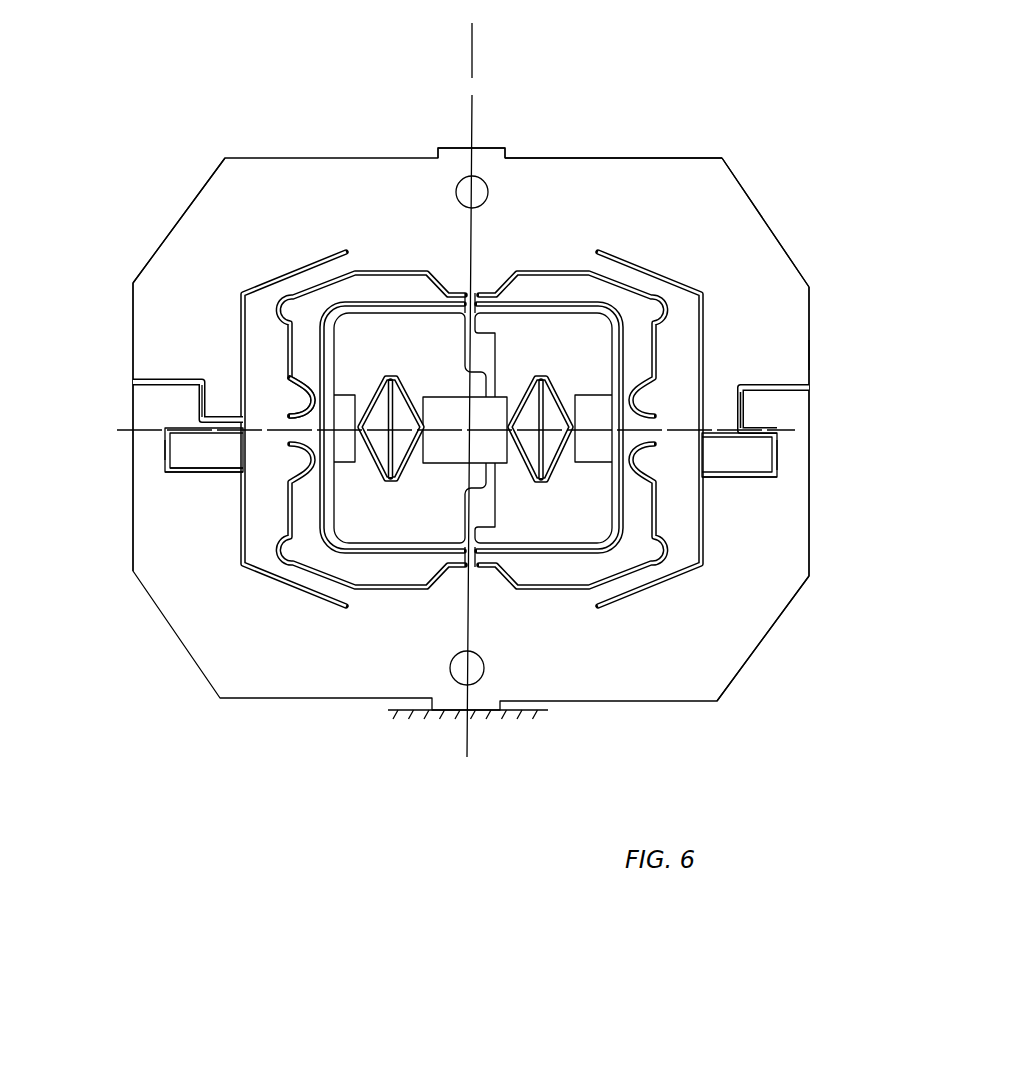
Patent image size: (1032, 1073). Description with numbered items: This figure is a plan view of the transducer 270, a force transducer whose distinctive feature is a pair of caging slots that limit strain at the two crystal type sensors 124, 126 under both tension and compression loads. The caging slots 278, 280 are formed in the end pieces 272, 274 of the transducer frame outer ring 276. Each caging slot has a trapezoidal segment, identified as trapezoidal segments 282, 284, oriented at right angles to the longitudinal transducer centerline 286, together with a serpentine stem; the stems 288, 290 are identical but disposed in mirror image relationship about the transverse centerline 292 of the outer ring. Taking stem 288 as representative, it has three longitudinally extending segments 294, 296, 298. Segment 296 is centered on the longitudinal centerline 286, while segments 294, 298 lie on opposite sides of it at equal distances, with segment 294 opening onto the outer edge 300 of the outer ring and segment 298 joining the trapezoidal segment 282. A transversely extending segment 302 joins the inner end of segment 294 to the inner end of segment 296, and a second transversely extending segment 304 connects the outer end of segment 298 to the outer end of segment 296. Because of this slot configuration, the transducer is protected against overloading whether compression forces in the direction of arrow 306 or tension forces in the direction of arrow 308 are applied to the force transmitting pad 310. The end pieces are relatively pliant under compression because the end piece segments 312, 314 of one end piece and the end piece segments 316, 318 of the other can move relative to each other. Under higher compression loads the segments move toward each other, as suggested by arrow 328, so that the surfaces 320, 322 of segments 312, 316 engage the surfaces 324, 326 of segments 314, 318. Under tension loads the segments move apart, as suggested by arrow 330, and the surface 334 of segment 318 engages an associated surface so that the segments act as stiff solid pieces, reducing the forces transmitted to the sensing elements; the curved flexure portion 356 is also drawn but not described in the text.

The transducer 270 is at (472, 390).
The end piece 272 is at (191, 233).
The end piece 274 is at (755, 205).
The transducer frame outer ring 276 is at (620, 153).
The caging slot 278 is at (226, 313).
The caging slot 280 is at (655, 263).
The trapezoidal segment 282 is at (287, 278).
The trapezoidal segment 284 is at (703, 322).
The longitudinal transducer centerline 286 is at (468, 226).
The stem 288 is at (140, 462).
The stem 290 is at (792, 470).
The transverse centerline 292 is at (430, 423).
The longitudinally extending segment 294 is at (747, 383).
The longitudinally extending segment 296 is at (738, 413).
The longitudinally extending segment 298 is at (717, 478).
The outer edge 300 is at (810, 352).
The transversely extending segment 302 is at (746, 410).
The transversely extending segment 304 is at (778, 450).
The arrow 306 is at (472, 52).
The arrow 308 is at (470, 128).
The force transmitting pad 310 is at (440, 148).
The end piece segment 312 is at (808, 320).
The end piece segment 314 is at (768, 613).
The end piece segment 316 is at (210, 178).
The end piece segment 318 is at (132, 540).
The surface 320 is at (183, 387).
The surface 322 is at (200, 472).
The surface 324 is at (173, 383).
The surface 326 is at (225, 473).
The arrow 328 is at (818, 362).
The arrow 330 is at (92, 368).
The surface 334 is at (187, 421).
The curved flexure segment 356 is at (188, 422).
The crystal type sensor 124 is at (374, 373).
The crystal type sensor 126 is at (537, 367).